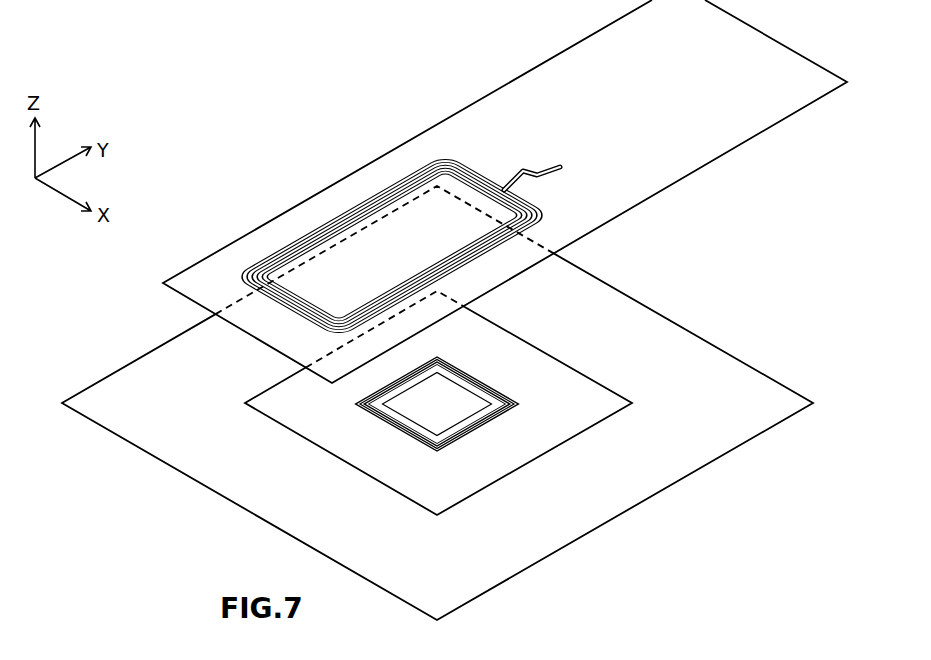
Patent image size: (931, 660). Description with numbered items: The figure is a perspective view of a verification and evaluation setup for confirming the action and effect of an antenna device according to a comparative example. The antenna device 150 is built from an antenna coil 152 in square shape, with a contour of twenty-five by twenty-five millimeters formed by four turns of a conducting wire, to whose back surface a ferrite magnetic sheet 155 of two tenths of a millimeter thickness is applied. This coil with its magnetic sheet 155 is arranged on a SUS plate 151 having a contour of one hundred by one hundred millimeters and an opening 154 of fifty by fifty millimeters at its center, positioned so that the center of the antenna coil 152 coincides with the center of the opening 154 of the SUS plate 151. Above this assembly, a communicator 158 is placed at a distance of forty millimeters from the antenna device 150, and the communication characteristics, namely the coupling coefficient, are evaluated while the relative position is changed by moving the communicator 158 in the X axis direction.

The antenna device 150 is at (454, 310).
The SUS plate 151 is at (743, 402).
The antenna coil 152 is at (457, 377).
The opening 154 is at (492, 443).
The magnetic sheet 155 is at (502, 393).
The communicator 158 is at (305, 182).